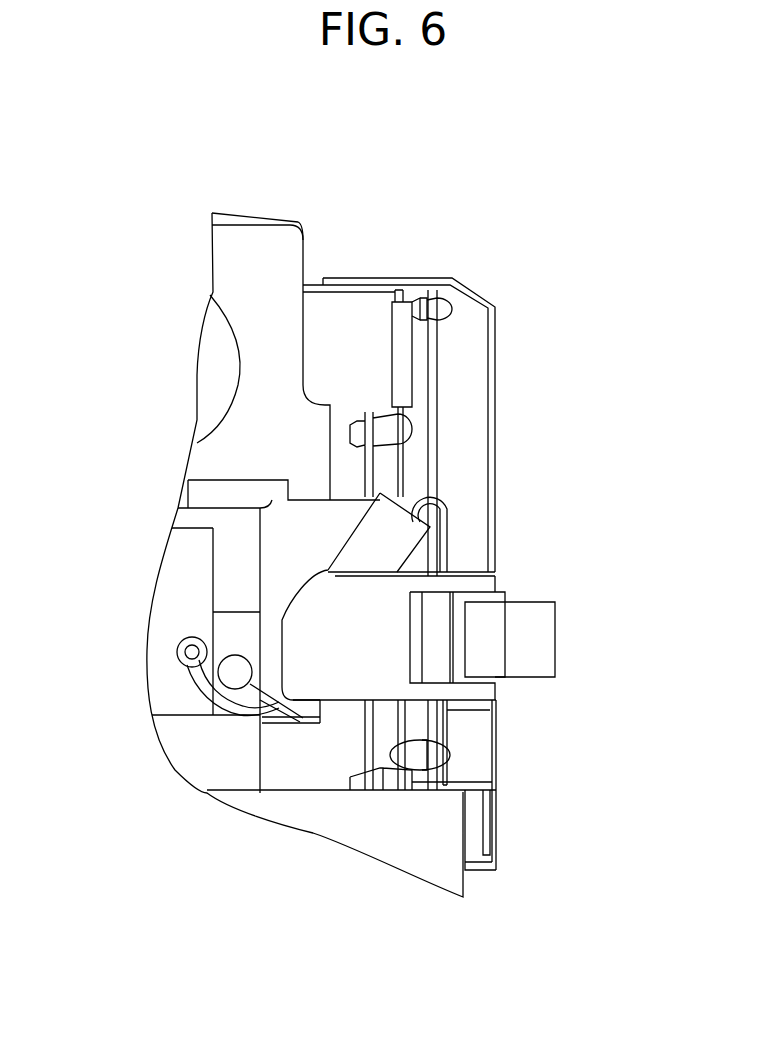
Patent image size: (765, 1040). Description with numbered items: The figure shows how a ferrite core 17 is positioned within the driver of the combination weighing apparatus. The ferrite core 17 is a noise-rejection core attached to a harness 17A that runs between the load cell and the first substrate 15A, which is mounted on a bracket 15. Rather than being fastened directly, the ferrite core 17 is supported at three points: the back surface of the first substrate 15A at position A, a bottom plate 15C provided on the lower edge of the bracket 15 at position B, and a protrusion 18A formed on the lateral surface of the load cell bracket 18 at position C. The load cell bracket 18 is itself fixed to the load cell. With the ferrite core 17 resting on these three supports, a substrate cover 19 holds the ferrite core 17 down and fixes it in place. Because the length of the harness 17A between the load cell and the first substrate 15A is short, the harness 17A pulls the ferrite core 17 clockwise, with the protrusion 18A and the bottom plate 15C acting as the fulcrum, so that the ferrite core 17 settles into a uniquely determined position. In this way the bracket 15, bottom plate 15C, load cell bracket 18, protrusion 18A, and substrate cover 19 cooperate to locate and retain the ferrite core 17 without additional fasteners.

The bracket 15 is at (302, 515).
The first substrate 15A is at (442, 435).
The bottom plate 15C is at (275, 728).
The ferrite core 17 is at (383, 550).
The harness 17A is at (185, 678).
The load cell bracket 18 is at (240, 613).
The protrusion 18A is at (225, 650).
The substrate cover 19 is at (377, 628).
The position A is at (430, 527).
The position B is at (302, 723).
The position C is at (250, 690).